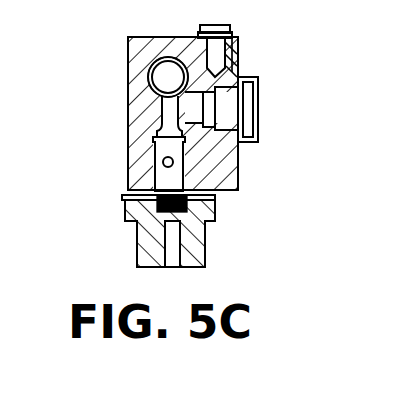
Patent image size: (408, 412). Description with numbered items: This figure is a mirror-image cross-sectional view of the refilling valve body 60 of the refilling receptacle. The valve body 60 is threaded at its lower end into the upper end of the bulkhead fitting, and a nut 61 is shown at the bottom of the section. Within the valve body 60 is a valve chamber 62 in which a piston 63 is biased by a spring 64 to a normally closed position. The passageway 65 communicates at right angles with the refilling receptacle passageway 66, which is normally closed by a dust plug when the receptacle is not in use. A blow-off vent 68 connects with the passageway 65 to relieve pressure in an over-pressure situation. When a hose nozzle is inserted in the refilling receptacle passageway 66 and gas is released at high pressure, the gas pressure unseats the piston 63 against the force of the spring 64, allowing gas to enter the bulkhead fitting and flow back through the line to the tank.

The refilling valve body 60 is at (129, 50).
The nut 61 is at (203, 248).
The valve chamber 62 is at (257, 133).
The piston 63 is at (176, 176).
The spring 64 is at (195, 213).
The passageway 65 is at (160, 128).
The refilling receptacle passageway 66 is at (153, 75).
The blow-off vent 68 is at (258, 84).